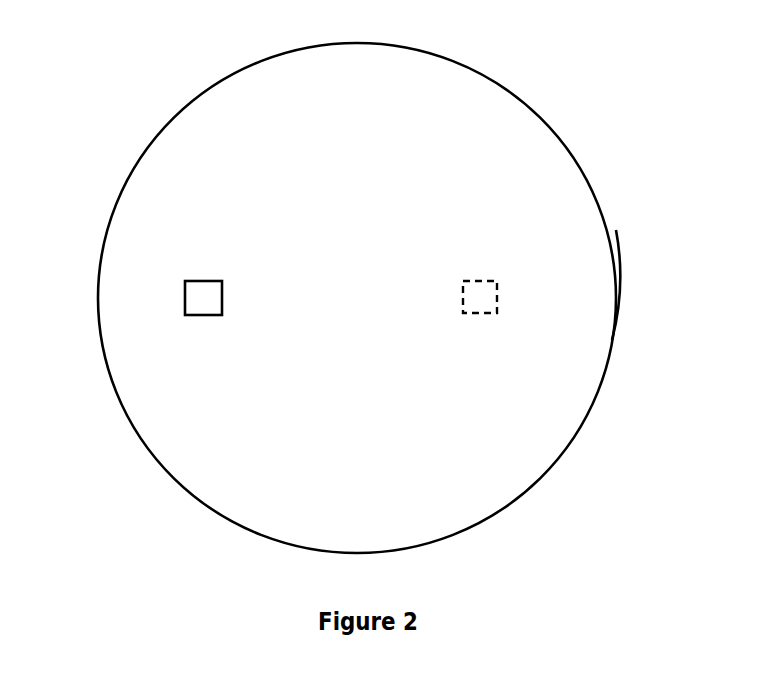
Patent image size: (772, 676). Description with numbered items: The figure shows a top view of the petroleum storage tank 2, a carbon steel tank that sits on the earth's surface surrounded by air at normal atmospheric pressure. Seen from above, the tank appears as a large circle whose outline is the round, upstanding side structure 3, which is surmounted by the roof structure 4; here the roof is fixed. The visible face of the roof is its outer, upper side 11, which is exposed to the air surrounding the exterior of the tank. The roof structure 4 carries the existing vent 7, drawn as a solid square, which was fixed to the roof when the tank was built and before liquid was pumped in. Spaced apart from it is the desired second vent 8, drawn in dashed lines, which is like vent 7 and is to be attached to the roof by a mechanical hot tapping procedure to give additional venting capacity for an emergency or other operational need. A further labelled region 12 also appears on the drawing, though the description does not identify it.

The petroleum storage tank 2 is at (372, 298).
The side structure 3 is at (616, 285).
The roof structure 4 is at (512, 238).
The vent 7 is at (205, 281).
The second vent 8 is at (479, 313).
The outer upper side 11 is at (378, 375).
The second region 12 is at (65, 318).